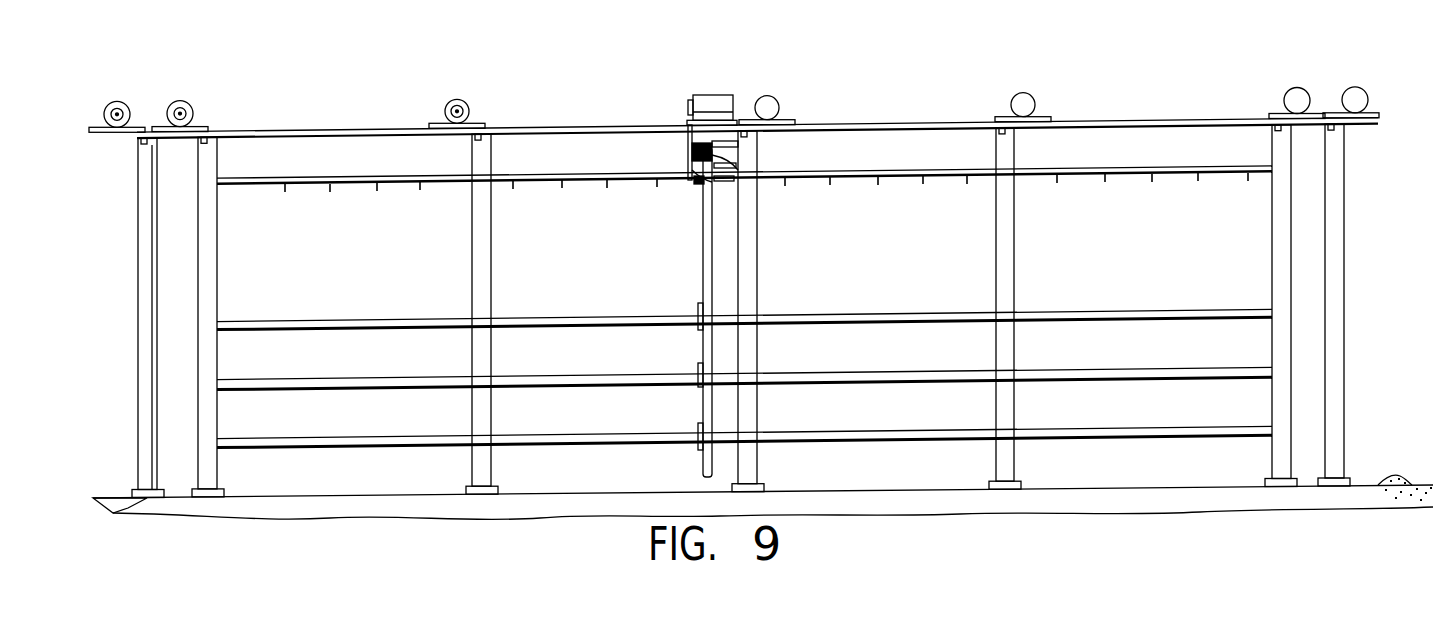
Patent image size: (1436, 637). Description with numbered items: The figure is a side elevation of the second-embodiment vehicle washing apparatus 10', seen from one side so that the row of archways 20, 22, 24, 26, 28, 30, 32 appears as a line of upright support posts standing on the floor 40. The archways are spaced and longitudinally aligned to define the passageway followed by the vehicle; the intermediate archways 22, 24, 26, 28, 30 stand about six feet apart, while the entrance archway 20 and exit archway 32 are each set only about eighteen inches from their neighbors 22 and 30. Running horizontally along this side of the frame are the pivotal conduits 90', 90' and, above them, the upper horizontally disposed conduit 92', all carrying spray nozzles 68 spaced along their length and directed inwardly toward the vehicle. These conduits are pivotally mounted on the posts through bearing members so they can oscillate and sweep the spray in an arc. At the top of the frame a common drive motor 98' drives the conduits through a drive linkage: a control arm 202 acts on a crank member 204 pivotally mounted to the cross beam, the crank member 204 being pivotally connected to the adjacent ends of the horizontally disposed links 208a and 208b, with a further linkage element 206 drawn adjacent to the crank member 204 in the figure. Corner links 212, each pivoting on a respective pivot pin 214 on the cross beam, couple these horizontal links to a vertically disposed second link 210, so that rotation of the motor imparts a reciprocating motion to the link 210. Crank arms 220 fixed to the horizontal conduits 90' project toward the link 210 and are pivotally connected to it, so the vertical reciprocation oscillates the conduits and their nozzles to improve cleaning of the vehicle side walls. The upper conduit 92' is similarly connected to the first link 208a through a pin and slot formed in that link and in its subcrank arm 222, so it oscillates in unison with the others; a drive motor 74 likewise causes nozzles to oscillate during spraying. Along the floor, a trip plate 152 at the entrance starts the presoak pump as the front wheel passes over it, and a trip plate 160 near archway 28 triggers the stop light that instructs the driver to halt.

The washing apparatus 10' is at (757, 79).
The archway 20 is at (1344, 290).
The archway 22 is at (1272, 272).
The archway 24 is at (996, 278).
The archway 26 is at (757, 292).
The archway 28 is at (472, 212).
The archway 30 is at (241, 255).
The archway 32 is at (137, 164).
The floor 40 is at (1140, 485).
The spray nozzles 68 is at (376, 188).
The drive motor 74 is at (117, 101).
The horizontally extending conduits 90' is at (744, 364).
The upper horizontally disposed conduit 92' is at (744, 198).
The drive motor 98' is at (714, 85).
The trip plate 152 is at (1396, 475).
The trip plate 160 is at (445, 486).
The control arm 202 is at (691, 137).
The crank member 204 is at (692, 152).
The rod 206 is at (738, 144).
The horizontally disposed link 208a is at (690, 186).
The horizontally disposed link 208b is at (737, 162).
The vertically disposed second links 210 is at (703, 271).
The corner links 212 is at (735, 170).
The pivot pins 214 is at (728, 184).
The crank arms 220 is at (699, 428).
The subcrank arm 222 is at (699, 186).